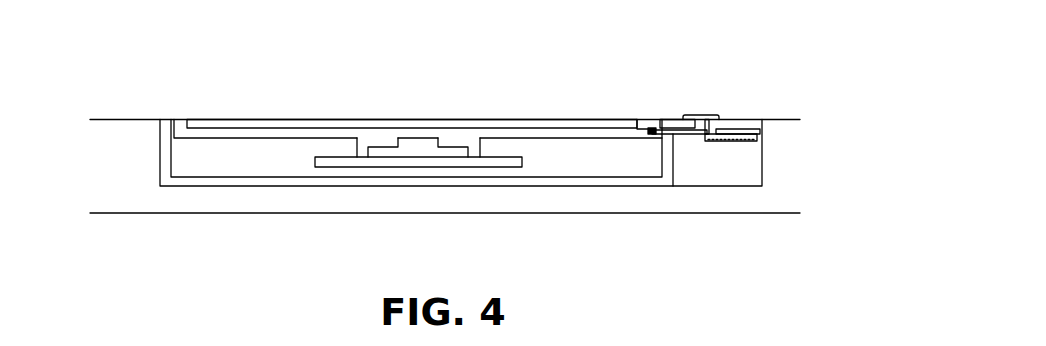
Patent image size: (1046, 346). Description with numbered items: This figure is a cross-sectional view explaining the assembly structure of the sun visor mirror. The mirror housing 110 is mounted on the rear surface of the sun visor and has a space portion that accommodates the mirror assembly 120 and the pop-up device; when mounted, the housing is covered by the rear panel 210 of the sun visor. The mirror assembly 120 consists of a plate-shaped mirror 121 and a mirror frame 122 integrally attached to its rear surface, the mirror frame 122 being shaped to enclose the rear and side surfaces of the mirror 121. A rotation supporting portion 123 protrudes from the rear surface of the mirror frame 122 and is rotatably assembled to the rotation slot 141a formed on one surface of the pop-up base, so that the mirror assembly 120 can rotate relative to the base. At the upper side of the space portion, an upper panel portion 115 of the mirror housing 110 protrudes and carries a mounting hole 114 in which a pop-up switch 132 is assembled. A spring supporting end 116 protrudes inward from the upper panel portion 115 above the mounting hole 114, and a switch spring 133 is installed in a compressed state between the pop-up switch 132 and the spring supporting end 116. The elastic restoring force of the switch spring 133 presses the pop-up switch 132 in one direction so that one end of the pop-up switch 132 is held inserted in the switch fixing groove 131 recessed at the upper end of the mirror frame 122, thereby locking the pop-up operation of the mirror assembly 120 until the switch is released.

The mirror housing 110 is at (673, 162).
The mounting hole 114 is at (712, 119).
The upper panel portion 115 is at (733, 124).
The spring supporting end 116 is at (750, 142).
The mirror assembly 120 is at (587, 67).
The mirror 121 is at (556, 119).
The mirror frame 122 is at (650, 124).
The rotation supporting portion 123 is at (420, 150).
The switch fixing groove 131 is at (647, 136).
The pop-up switch 132 is at (700, 120).
The switch spring 133 is at (727, 142).
The rotation slot 141a is at (475, 162).
The rear panel 210 is at (780, 127).